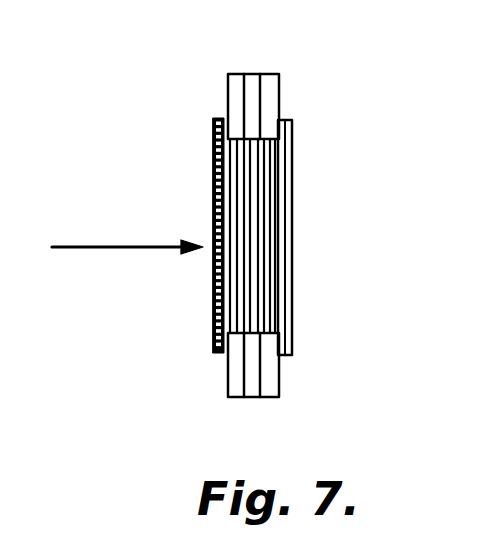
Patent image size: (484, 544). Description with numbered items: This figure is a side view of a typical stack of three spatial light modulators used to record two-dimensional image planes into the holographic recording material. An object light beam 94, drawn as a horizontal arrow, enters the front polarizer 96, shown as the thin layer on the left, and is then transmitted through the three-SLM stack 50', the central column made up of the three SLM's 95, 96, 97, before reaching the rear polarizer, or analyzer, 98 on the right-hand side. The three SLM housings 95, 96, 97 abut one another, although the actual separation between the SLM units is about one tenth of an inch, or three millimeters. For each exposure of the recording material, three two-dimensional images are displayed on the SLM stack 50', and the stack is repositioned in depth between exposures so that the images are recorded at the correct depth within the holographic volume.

The 3-SLM stack 50' is at (290, 213).
The object light beam 94 is at (137, 248).
The SLM 95 is at (230, 410).
The front polarizer 96 is at (201, 172).
The SLM 97 is at (280, 408).
The rear polarizer 98 is at (305, 198).